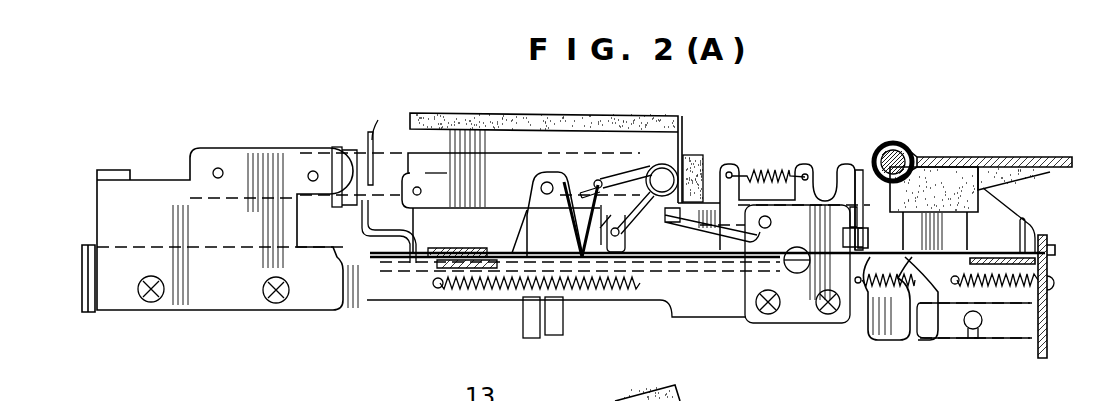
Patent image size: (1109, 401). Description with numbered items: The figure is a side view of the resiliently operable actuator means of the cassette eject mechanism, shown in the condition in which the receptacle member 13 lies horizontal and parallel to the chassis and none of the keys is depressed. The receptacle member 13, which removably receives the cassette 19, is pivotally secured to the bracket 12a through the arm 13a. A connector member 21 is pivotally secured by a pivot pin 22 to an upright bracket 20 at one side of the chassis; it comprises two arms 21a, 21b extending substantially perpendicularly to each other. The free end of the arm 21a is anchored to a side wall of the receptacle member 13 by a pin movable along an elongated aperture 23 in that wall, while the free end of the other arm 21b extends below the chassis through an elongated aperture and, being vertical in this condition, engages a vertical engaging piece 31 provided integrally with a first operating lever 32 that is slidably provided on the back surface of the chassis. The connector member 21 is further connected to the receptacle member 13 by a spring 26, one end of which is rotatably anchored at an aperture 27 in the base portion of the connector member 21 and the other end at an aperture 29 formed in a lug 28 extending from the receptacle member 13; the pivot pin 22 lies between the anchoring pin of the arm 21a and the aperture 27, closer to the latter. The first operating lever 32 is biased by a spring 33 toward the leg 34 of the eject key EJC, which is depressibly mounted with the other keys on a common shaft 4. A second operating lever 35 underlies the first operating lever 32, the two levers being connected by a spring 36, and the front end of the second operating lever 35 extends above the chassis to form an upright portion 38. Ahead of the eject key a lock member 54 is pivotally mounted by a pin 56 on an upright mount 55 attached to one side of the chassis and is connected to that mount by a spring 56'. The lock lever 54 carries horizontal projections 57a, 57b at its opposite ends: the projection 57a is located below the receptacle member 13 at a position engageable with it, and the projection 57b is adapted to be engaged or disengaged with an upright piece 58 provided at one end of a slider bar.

The bracket 12a is at (232, 225).
The upright portion 38 is at (366, 140).
The receptacle member 13 is at (655, 119).
The arm 13a is at (392, 150).
The connector member 21 is at (503, 185).
The arm 21a is at (435, 180).
The arm 21b is at (531, 320).
The vertical engaging piece 31 is at (549, 318).
The elongated aperture 23 is at (412, 192).
The second operating lever 35 is at (468, 252).
The spring 36 is at (482, 292).
The upright bracket 20 is at (527, 228).
The pivot pin 22 is at (548, 182).
The aperture 27 is at (599, 178).
The spring 26 is at (670, 167).
The lug 28 is at (615, 240).
The aperture 29 is at (606, 262).
The horizontal projection 57a is at (625, 242).
The cassette 19 is at (712, 175).
The lock member 54 is at (712, 240).
The pin 56 is at (780, 233).
The spring 56' is at (768, 148).
The horizontal projection 57b is at (856, 172).
The upright mount 55 is at (797, 273).
The common shaft 4 is at (897, 150).
The eject key EJC is at (1010, 155).
The upright piece 58 is at (865, 237).
The leg 34 is at (950, 234).
The spring 33 is at (922, 300).
The first operating lever 32 is at (878, 320).